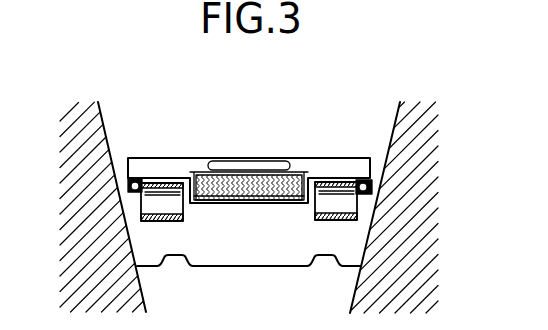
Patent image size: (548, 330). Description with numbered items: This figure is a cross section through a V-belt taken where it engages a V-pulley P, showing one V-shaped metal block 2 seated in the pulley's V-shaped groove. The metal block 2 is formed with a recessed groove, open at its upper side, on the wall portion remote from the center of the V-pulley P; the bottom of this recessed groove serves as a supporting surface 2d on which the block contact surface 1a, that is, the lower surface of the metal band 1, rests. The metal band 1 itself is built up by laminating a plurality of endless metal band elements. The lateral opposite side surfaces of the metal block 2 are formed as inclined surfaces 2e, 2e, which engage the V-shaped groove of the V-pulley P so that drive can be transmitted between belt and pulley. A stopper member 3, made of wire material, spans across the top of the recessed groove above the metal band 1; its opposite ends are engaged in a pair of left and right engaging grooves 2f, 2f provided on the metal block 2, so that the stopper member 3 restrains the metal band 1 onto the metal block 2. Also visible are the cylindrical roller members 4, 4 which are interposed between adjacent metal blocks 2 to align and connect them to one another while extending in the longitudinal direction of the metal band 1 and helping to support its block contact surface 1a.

The metal band 1 is at (224, 176).
The block contact surface 1a is at (218, 198).
The V-shaped metal block 2 is at (237, 258).
The supporting surface 2d is at (276, 200).
The inclined surfaces 2e is at (129, 242).
The engaging grooves 2f is at (132, 188).
The stopper member 3 is at (263, 165).
The cylindrical roller member 4 is at (157, 222).
The V-pulley P is at (107, 135).